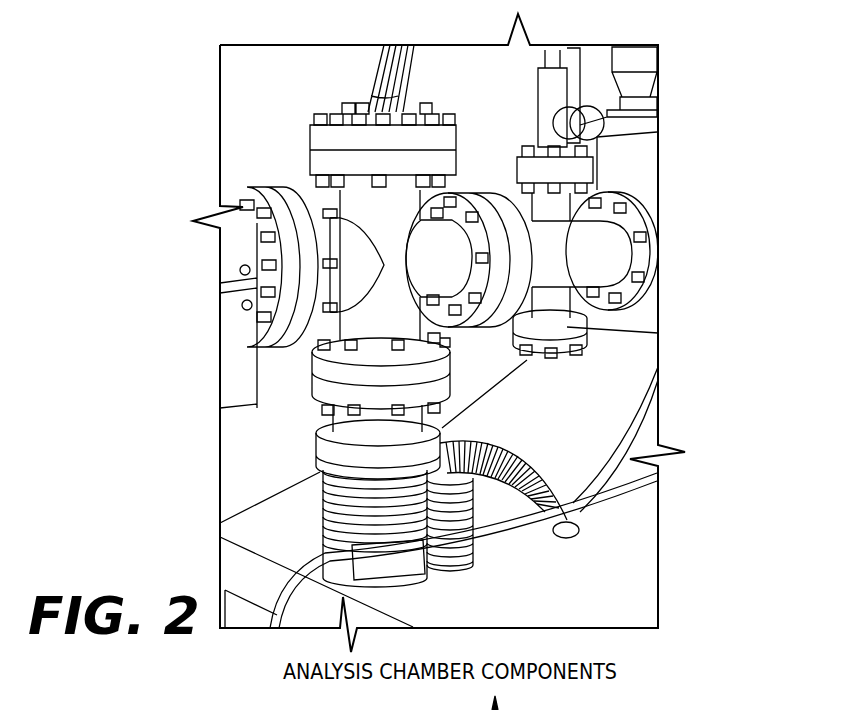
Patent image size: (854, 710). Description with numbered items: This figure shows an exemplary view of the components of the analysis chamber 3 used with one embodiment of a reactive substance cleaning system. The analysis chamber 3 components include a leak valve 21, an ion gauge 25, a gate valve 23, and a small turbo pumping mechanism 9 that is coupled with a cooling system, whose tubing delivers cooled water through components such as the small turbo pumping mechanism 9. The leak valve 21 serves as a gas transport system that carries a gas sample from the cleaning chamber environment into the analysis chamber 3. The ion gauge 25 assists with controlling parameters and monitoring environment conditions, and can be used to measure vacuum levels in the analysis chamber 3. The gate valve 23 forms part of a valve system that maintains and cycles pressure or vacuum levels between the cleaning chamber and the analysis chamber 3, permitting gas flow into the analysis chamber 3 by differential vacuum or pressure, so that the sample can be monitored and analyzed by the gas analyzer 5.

The analysis chamber 3 is at (307, 131).
The gas analyzer 5 is at (221, 304).
The small turbo pumping mechanism 9 is at (513, 538).
The leak valve 21 is at (536, 85).
The gate valve 23 is at (659, 182).
The ion gauge 25 is at (373, 73).